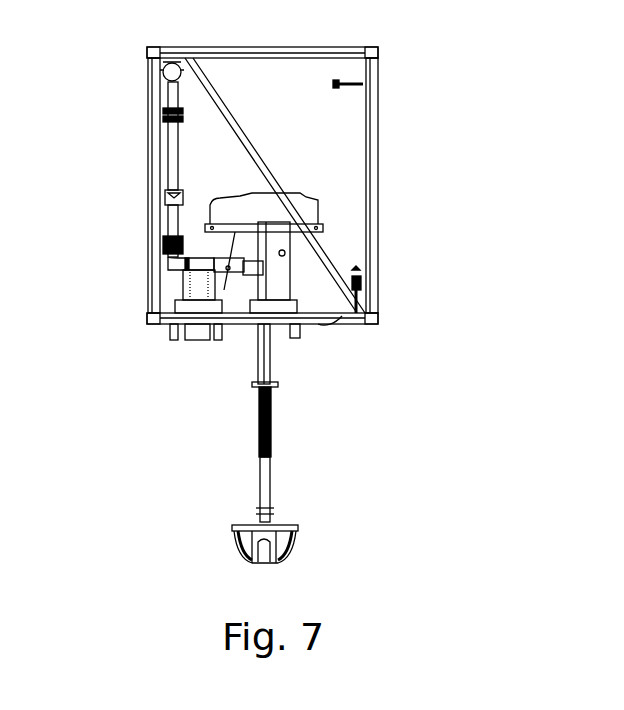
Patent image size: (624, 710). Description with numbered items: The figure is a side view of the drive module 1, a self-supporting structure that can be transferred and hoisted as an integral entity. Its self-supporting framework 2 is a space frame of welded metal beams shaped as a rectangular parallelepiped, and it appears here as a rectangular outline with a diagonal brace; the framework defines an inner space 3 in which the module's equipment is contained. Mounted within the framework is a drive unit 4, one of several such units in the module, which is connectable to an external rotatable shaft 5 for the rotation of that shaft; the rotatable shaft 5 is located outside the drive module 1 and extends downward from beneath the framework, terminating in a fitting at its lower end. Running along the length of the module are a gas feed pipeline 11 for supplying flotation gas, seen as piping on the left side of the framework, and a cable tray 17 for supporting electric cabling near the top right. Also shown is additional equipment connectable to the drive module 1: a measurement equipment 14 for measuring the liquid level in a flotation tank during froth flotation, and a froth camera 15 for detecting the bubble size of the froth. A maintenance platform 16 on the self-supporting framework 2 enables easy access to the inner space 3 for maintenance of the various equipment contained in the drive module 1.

The drive module 1 is at (102, 67).
The self-supporting framework 2 is at (149, 120).
The inner space 3 is at (307, 132).
The drive unit 4 is at (250, 200).
The rotatable shaft 5 is at (262, 492).
The gas feed pipeline 11 is at (178, 65).
The measurement equipment 14 is at (275, 283).
The froth camera 15 is at (206, 330).
The maintenance platform 16 is at (340, 310).
The cable tray 17 is at (348, 83).